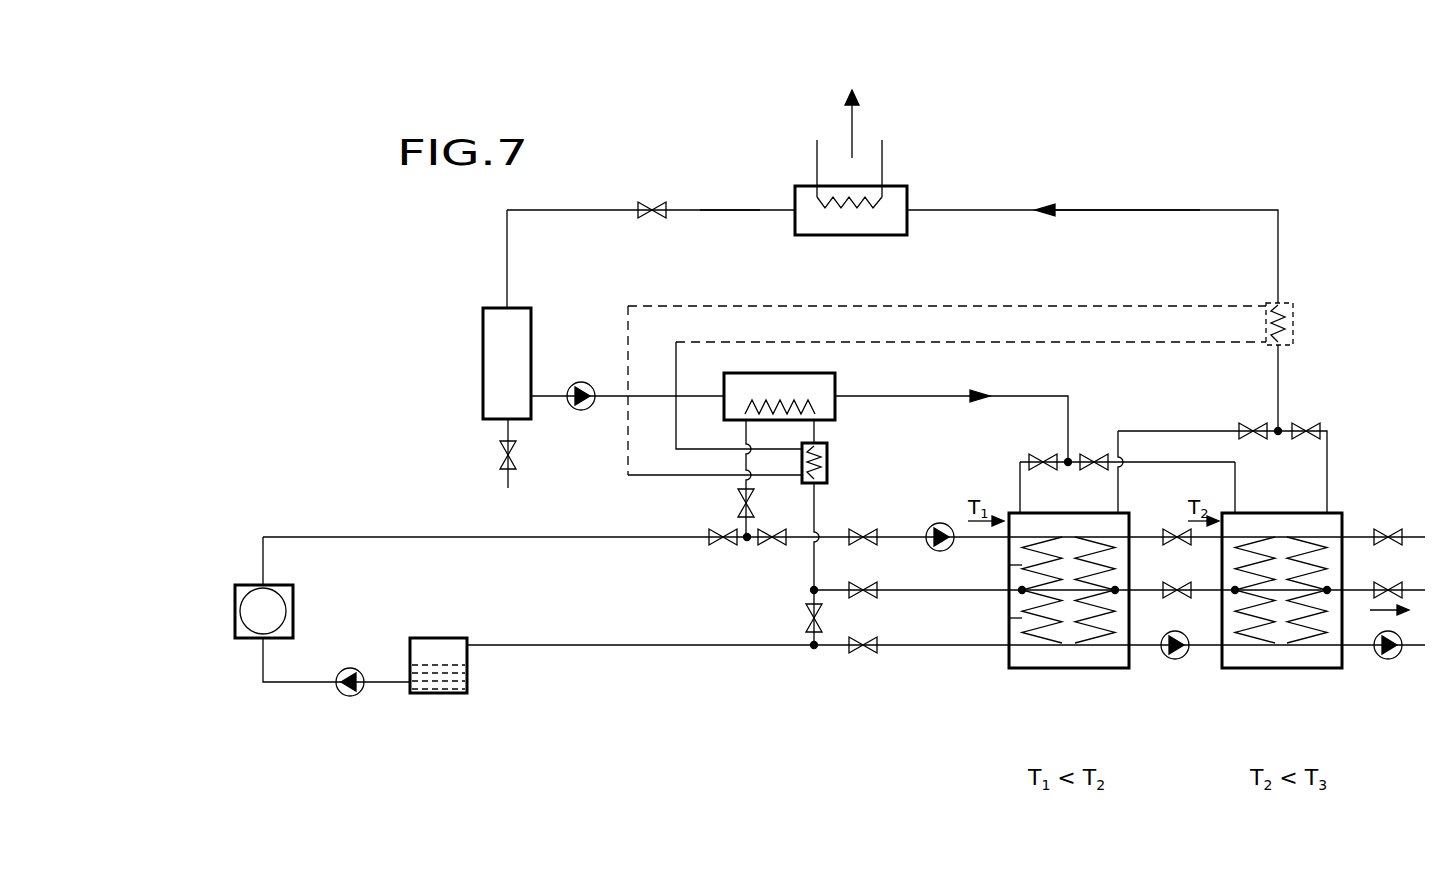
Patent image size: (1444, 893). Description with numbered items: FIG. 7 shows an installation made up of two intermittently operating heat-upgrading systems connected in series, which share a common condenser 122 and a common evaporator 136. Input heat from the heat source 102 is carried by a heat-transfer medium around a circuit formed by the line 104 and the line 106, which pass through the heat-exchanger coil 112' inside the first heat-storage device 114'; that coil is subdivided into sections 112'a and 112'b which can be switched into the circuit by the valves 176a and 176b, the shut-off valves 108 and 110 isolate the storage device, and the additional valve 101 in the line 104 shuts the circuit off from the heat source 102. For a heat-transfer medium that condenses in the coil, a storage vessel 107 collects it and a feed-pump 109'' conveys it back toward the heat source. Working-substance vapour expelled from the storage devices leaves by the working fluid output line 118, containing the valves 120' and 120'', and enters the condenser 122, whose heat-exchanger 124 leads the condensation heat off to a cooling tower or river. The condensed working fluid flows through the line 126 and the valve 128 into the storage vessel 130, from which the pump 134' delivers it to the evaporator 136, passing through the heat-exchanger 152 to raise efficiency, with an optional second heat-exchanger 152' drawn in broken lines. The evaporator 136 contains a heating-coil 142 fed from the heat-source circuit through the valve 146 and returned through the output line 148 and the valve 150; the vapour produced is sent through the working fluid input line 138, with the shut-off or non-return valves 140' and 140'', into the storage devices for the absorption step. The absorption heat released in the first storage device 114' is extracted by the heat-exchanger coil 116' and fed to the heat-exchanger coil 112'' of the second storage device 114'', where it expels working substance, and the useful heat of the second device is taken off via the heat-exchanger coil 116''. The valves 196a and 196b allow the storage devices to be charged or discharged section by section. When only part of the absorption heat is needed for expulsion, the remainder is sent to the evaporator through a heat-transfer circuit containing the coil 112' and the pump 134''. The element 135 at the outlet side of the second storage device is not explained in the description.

The additional valve 101 is at (708, 545).
The heat source 102 is at (290, 585).
The line 104 is at (392, 537).
The line 106 is at (632, 645).
The storage vessel 107 is at (450, 640).
The shut-off valve 108 is at (768, 546).
The feed-pump 109'' is at (1186, 674).
The shut-off valve 110 is at (862, 654).
The heat-exchanger coil 112' is at (1056, 624).
The heat-exchanger coil section 112'a is at (979, 621).
The heat-exchanger coil section 112'b is at (979, 571).
The heat-exchanger coil 112'' is at (1282, 624).
The heat-storage device 114' is at (1057, 641).
The heat-storage device 114'' is at (1286, 641).
The heat-exchanger coil 116' is at (1110, 634).
The heat-exchanger coil 116'' is at (1338, 633).
The working fluid output line 118 is at (1100, 210).
The valve 120' is at (1231, 407).
The valve 120'' is at (1333, 407).
The condenser 122 is at (907, 186).
The heat-exchanger 124 is at (863, 209).
The line 126 is at (733, 210).
The valve 128 is at (660, 203).
The storage vessel 130 is at (487, 320).
The pump 134' is at (587, 421).
The pump 134'' is at (944, 506).
The pump 135 is at (1387, 659).
The evaporator 136 is at (830, 386).
The working fluid input line 138 is at (940, 396).
The shut-off valve or non-return valve 140' is at (1023, 441).
The shut-off valve or non-return valve 140'' is at (1104, 433).
The heating-coil 142 is at (812, 405).
The valve 146 is at (738, 505).
The output line 148 is at (818, 497).
The valve 150 is at (806, 618).
The heat-exchanger 152 is at (851, 461).
The heat-exchanger 152' is at (1318, 349).
The valve 176a is at (856, 583).
The valve 176b is at (856, 530).
The valve 196a is at (1176, 583).
The valve 196b is at (1172, 530).